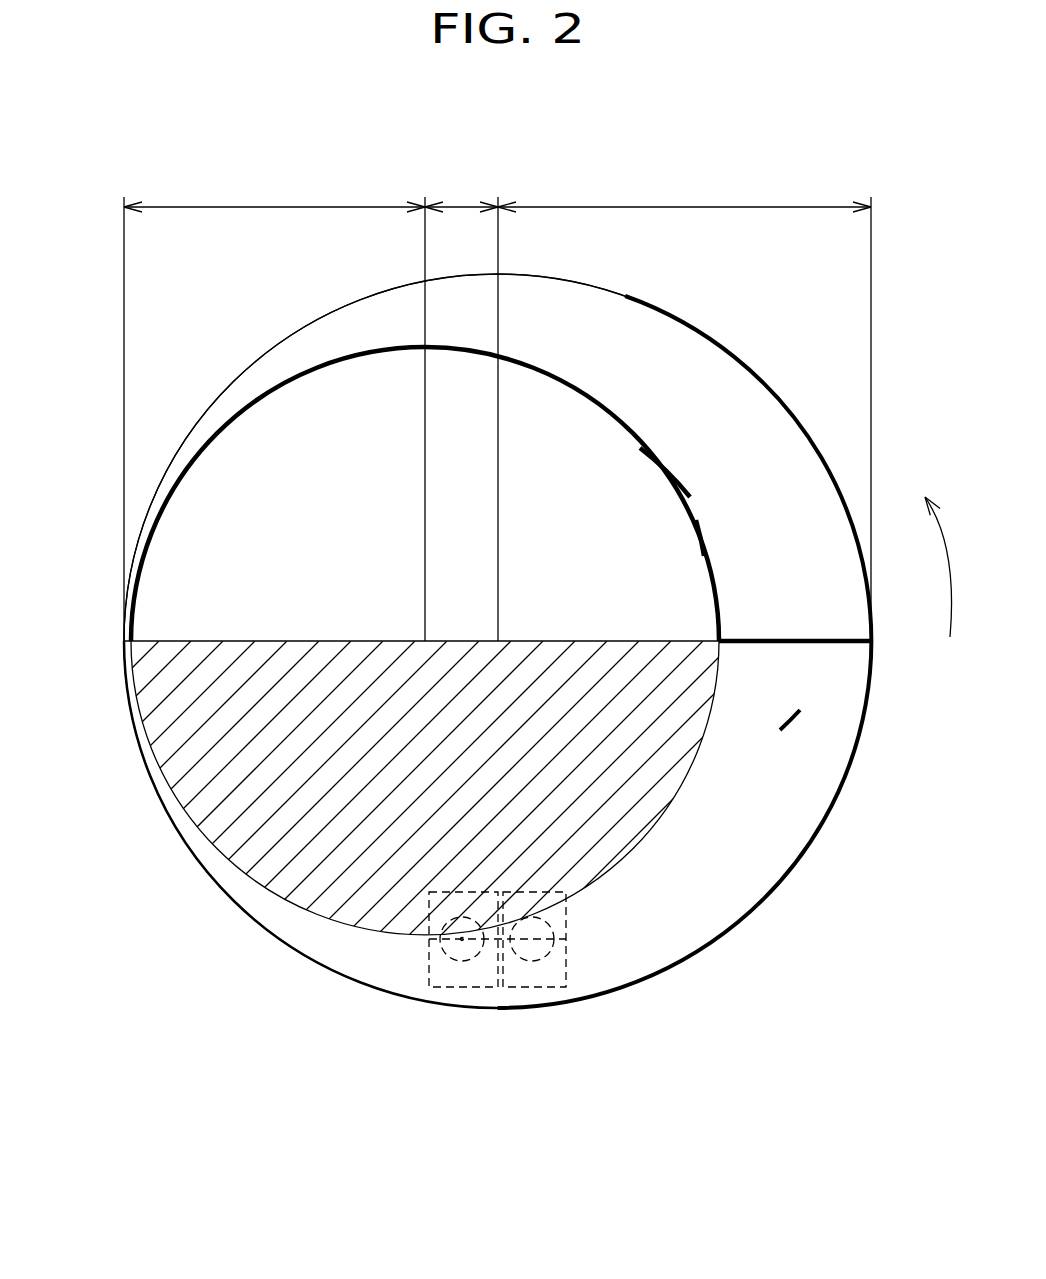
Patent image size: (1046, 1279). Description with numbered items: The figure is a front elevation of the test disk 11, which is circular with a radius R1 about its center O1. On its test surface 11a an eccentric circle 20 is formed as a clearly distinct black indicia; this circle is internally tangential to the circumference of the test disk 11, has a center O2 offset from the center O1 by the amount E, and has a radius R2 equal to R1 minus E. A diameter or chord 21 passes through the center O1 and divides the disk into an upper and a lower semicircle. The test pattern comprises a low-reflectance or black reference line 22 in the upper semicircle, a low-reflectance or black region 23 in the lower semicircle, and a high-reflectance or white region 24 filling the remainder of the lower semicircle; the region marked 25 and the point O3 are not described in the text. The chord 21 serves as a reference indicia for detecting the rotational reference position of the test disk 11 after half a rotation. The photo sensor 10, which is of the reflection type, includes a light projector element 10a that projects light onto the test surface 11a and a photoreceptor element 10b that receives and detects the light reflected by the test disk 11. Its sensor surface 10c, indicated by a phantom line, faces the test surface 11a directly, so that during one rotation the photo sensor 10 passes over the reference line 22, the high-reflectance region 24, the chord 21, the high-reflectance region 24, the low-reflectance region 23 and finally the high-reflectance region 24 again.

The photo sensor 10 is at (535, 950).
The light projector element 10a is at (427, 962).
The photoreceptor element 10b is at (560, 930).
The sensor surface 10c is at (478, 925).
The test disk 11 is at (197, 863).
The test surface 11a is at (763, 850).
The eccentric circle 20 is at (581, 391).
The chord 21 is at (790, 641).
The low-reflectance reference line 22 is at (665, 467).
The low-reflectance region 23 is at (178, 733).
The high-reflectance region 24 is at (668, 532).
The clearance 25 is at (357, 330).
The center of the test disk O1 is at (498, 641).
The center of the eccentric circle O2 is at (425, 641).
The pump center O3 is at (483, 948).
The radius of the test disk R1 is at (684, 405).
The radius of the eccentric circle R2 is at (274, 405).
The offset amount E is at (461, 191).